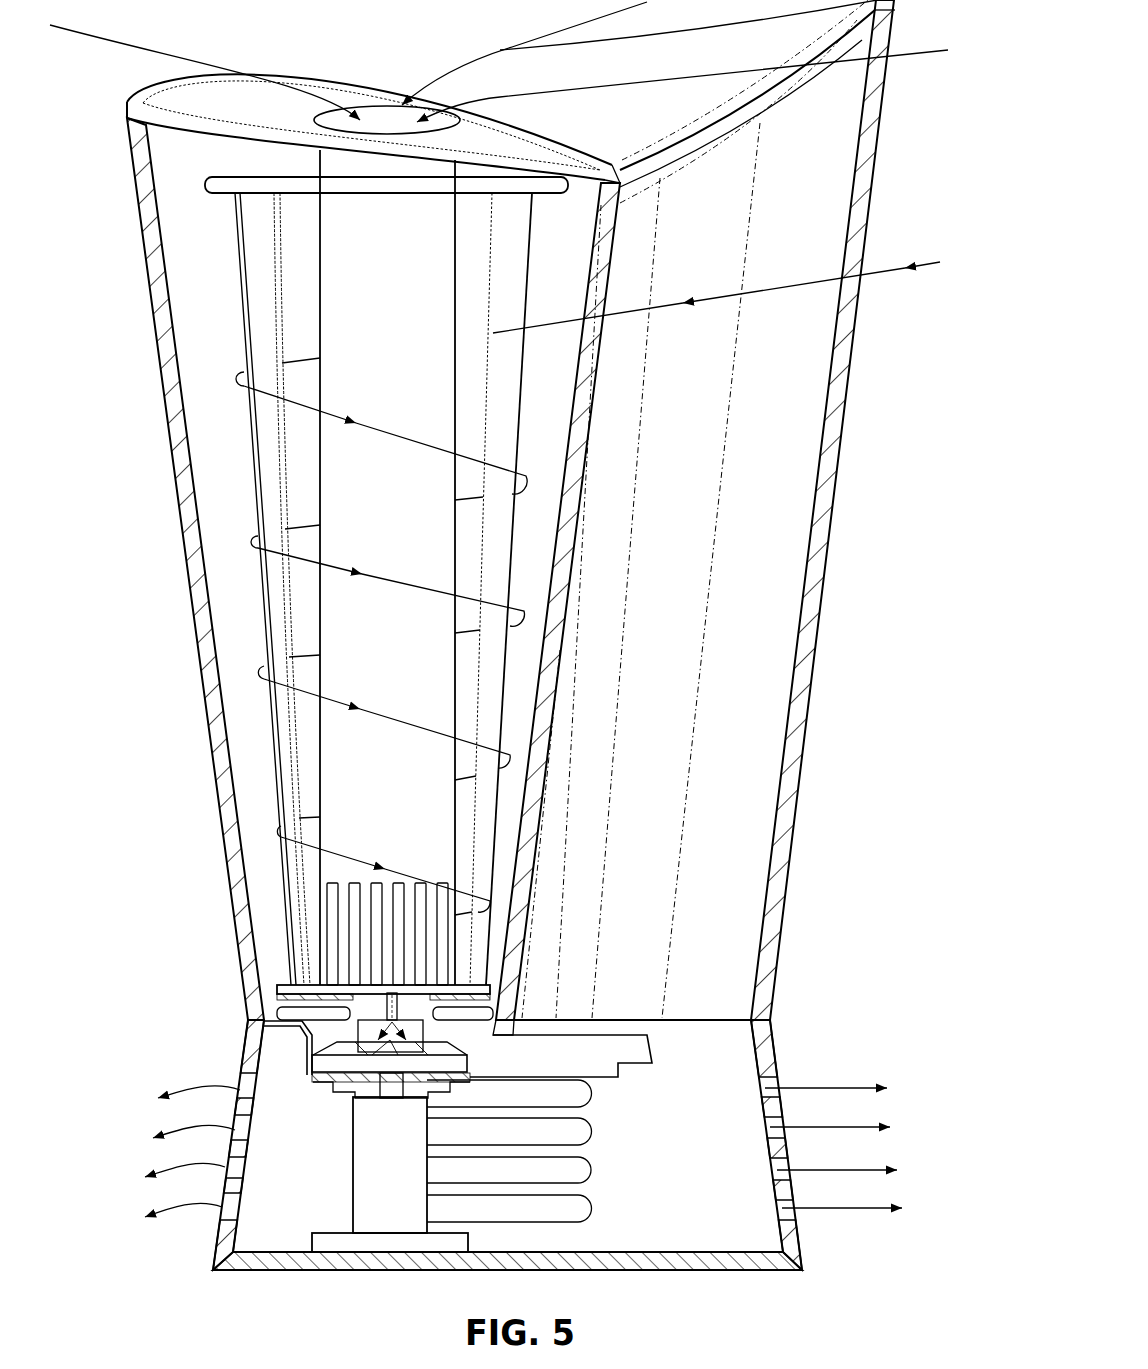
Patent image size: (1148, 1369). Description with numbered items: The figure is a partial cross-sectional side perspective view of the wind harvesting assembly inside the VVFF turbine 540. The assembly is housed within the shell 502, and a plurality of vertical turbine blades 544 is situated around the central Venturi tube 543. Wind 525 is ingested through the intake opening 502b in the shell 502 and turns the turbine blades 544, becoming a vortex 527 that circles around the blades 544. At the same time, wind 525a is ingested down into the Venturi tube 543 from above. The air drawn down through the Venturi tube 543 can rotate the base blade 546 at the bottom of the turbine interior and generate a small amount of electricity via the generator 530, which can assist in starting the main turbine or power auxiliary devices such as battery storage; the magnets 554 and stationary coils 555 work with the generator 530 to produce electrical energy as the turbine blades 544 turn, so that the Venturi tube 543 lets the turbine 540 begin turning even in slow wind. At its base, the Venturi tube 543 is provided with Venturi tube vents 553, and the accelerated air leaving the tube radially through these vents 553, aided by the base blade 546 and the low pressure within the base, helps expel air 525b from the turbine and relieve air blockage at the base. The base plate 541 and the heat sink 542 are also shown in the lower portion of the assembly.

The shell 502 is at (822, 587).
The intake opening 502b is at (620, 360).
The wind 525 is at (877, 273).
The wind 525a is at (430, 62).
The air 525b is at (213, 1095).
The vortex 527 is at (232, 372).
The generator 530 is at (414, 1205).
The VVFF turbine 540 is at (100, 252).
The base plate 541 is at (797, 1247).
The heat sink 542 is at (590, 1097).
The Venturi tube 543 is at (414, 257).
The turbine blades 544 is at (240, 273).
The base blade 546 is at (312, 1076).
The Venturi tube vents 553 is at (407, 960).
The magnets 554 is at (275, 997).
The stationary coils 555 is at (275, 1013).